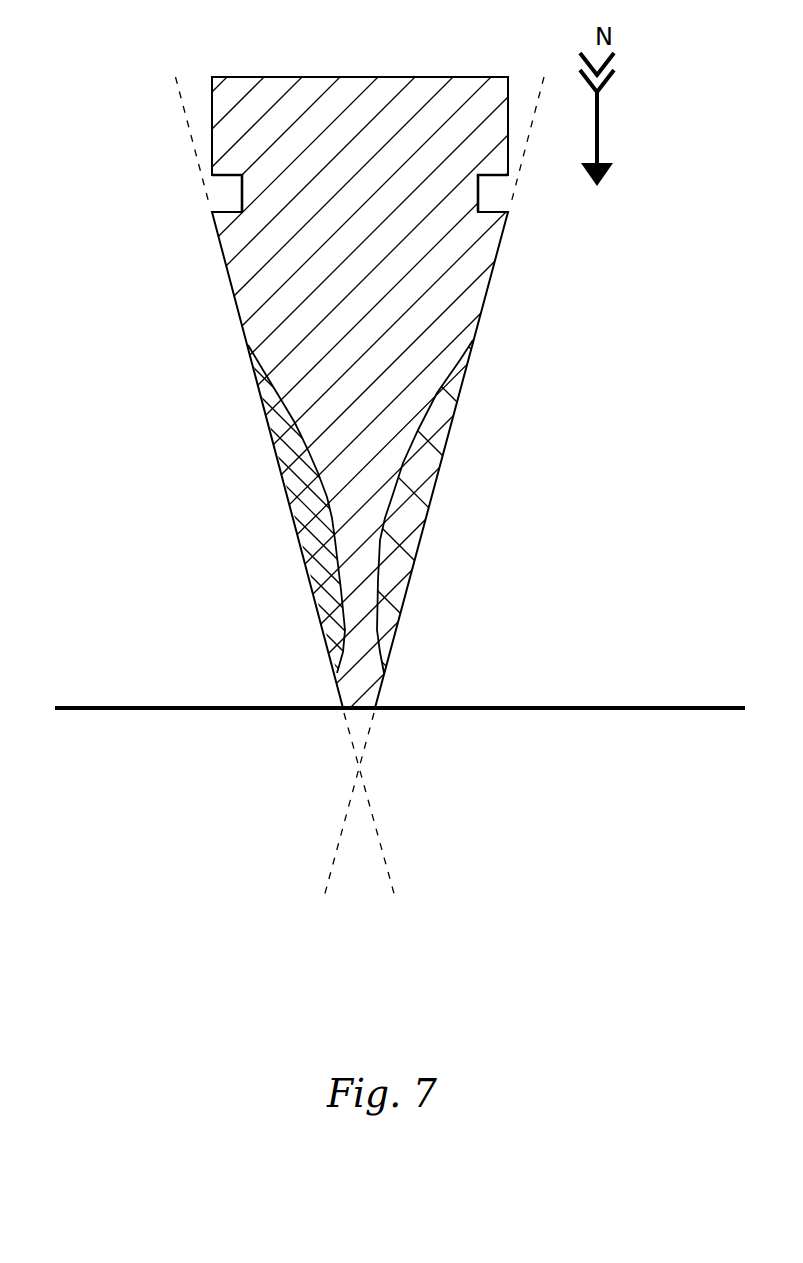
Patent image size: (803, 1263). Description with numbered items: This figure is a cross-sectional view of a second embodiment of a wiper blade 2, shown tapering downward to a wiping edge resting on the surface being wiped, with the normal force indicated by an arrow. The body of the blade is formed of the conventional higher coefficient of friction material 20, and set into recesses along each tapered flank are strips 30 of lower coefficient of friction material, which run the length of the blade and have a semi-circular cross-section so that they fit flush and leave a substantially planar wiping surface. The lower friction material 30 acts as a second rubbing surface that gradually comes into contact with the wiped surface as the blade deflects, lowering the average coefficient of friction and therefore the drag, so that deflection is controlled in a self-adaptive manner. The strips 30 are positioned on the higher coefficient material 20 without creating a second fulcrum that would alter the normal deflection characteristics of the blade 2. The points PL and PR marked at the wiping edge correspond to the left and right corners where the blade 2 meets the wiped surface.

The wiper blade 2 is at (118, 85).
The higher coefficient of friction material 20 is at (234, 293).
The strips of lower coefficient of friction material 30 is at (283, 478).
The left contact point PL is at (343, 708).
The right contact point PR is at (375, 708).